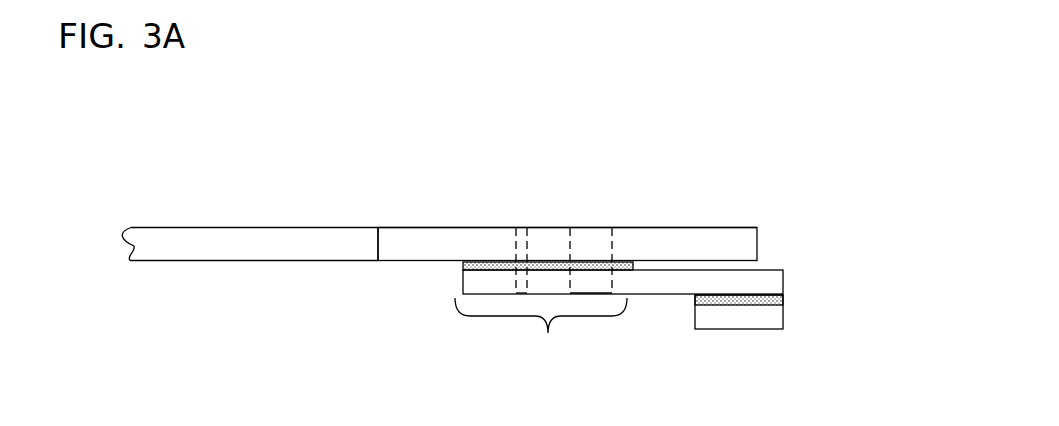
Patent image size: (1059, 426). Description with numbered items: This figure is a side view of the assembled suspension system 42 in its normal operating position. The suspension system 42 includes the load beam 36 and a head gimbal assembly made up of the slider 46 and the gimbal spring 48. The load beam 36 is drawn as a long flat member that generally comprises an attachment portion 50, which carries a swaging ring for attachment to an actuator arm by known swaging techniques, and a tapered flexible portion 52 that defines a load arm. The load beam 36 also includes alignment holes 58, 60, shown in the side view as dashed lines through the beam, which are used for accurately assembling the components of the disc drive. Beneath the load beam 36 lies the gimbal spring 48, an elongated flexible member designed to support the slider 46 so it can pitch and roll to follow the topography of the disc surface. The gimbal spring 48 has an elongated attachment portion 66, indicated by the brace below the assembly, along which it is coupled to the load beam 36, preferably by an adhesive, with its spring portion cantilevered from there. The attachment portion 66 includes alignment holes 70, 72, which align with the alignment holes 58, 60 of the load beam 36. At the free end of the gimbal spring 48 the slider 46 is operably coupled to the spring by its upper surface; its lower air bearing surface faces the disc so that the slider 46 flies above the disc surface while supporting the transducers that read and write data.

The load beam 36 is at (434, 224).
The suspension system 42 is at (639, 169).
The slider 46 is at (787, 315).
The gimbal spring 48 is at (784, 268).
The attachment portion 50 is at (220, 256).
The tapered flexible portion 52 is at (692, 228).
The alignment hole 58 is at (517, 228).
The alignment hole 60 is at (585, 228).
The attachment portion 66 is at (541, 332).
The alignment hole 70 is at (526, 294).
The alignment hole 72 is at (588, 291).